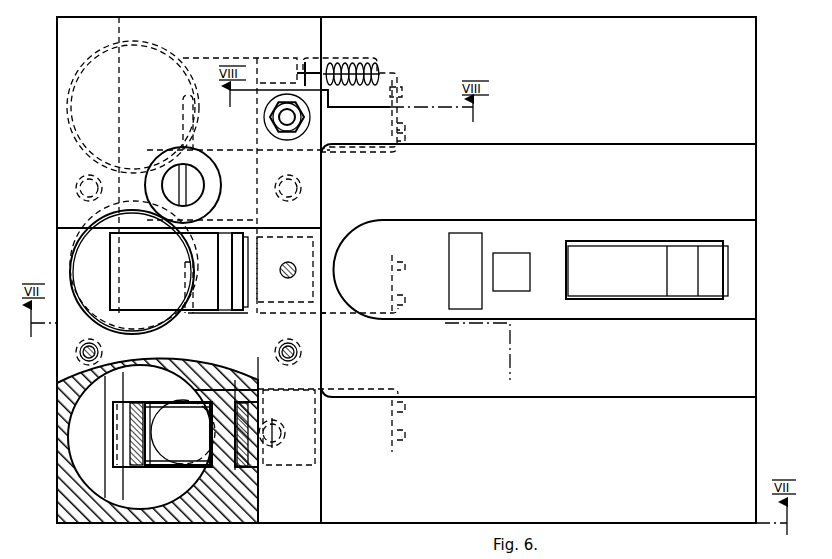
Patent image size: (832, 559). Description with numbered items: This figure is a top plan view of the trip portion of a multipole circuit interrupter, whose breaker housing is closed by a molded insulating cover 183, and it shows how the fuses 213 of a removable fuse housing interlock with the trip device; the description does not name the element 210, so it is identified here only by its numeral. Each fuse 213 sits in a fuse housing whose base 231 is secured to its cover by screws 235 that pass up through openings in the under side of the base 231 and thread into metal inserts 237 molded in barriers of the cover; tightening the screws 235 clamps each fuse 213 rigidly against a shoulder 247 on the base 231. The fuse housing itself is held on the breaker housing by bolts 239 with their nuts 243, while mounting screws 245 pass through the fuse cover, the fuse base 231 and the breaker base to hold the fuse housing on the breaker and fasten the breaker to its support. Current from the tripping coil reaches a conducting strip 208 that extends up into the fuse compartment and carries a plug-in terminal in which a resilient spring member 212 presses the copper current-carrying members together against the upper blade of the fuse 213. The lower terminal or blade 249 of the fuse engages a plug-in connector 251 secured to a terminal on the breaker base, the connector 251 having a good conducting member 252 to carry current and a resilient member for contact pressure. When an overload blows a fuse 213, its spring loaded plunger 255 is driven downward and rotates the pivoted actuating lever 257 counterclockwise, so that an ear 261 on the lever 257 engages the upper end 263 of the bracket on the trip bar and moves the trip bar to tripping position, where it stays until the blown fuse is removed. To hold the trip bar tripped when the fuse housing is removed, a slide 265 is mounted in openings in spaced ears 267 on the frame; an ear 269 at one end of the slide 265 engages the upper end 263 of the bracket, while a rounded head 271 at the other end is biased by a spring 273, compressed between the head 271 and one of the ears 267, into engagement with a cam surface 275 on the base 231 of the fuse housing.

The cover 183 is at (740, 198).
The conducting strip 208 is at (238, 468).
The solenoid 210 is at (112, 280).
The spring member 212 is at (237, 266).
The fuse 213 is at (172, 50).
The base 231 is at (72, 490).
The screws 235 is at (98, 199).
The metal inserts 237 is at (82, 180).
The bolts 239 is at (296, 275).
The nuts 243 is at (287, 140).
The mounting screws 245 is at (198, 186).
The shoulder 247 is at (80, 452).
The lower terminal or blade 249 is at (145, 394).
The plug-in connector 251 is at (153, 490).
The conducting member 252 is at (112, 437).
The spring loaded plunger 255 is at (186, 437).
The actuating lever 257 is at (241, 148).
The ear 261 is at (406, 136).
The upper end of bracket 263 is at (406, 120).
The slide 265 is at (385, 66).
The ears 267 is at (303, 70).
The ear 269 is at (403, 88).
The rounded head 271 is at (355, 109).
The spring 273 is at (345, 58).
The cam surface 275 is at (268, 55).